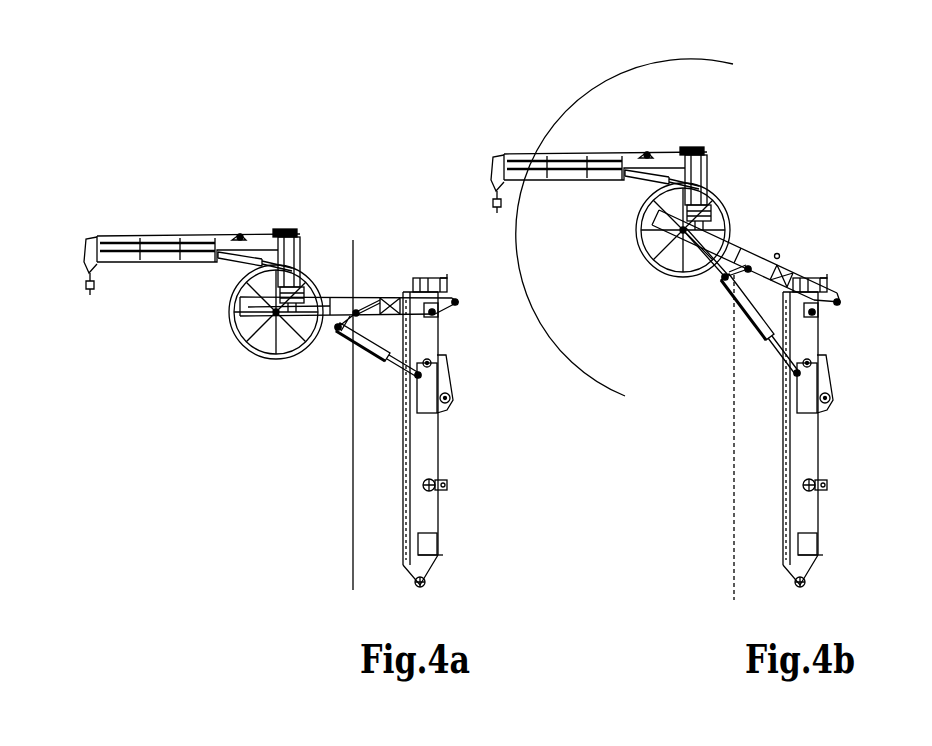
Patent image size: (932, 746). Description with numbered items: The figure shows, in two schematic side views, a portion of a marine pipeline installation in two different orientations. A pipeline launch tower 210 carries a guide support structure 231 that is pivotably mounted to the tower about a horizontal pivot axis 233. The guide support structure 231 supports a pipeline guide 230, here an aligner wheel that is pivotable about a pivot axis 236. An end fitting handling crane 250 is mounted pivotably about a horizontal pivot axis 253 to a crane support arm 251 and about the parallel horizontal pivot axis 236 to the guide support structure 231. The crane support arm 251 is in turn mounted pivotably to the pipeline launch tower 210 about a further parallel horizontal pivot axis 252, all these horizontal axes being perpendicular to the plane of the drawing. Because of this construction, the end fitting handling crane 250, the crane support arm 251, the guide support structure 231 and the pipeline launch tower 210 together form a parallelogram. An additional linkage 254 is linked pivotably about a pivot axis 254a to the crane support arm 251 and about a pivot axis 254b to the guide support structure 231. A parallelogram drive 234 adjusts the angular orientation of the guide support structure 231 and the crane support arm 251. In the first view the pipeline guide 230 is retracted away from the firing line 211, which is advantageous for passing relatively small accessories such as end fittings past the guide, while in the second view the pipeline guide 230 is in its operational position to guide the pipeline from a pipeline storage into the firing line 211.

In FIG. 4A, the pipeline launch tower 210 is at (425, 448).
In FIG. 4A, the firing line 211 is at (352, 523).
In FIG. 4A, the pipeline guide 230 is at (256, 370).
In FIG. 4A, the guide support structure 231 is at (365, 316).
In FIG. 4A, the horizontal pivot axis 233 is at (434, 312).
In FIG. 4A, the parallelogram drive 234 is at (388, 363).
In FIG. 4A, the pivot axis 236 is at (300, 352).
In FIG. 4A, the end fitting handling crane 250 is at (204, 237).
In FIG. 4A, the crane support arm 251 is at (365, 294).
In FIG. 4A, the horizontal pivot axis 252 is at (456, 300).
In FIG. 4A, the horizontal pivot axis 253 is at (307, 295).
In FIG. 4B, the additional linkage 254 is at (749, 269).
In FIG. 4B, the pivot axis 254a is at (778, 255).
In FIG. 4B, the pivot axis 254b is at (749, 268).